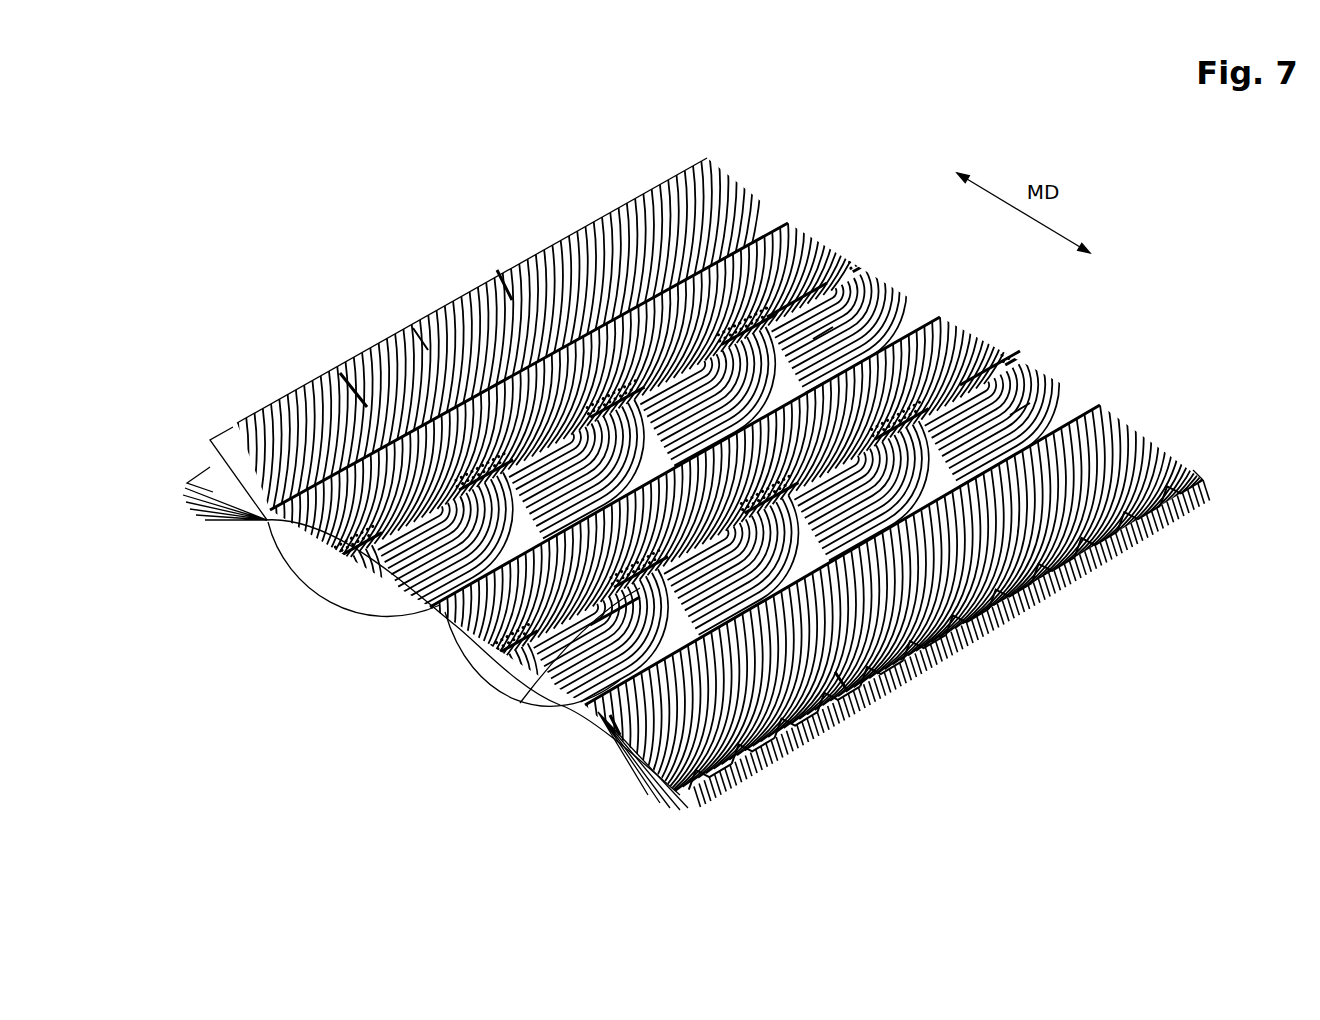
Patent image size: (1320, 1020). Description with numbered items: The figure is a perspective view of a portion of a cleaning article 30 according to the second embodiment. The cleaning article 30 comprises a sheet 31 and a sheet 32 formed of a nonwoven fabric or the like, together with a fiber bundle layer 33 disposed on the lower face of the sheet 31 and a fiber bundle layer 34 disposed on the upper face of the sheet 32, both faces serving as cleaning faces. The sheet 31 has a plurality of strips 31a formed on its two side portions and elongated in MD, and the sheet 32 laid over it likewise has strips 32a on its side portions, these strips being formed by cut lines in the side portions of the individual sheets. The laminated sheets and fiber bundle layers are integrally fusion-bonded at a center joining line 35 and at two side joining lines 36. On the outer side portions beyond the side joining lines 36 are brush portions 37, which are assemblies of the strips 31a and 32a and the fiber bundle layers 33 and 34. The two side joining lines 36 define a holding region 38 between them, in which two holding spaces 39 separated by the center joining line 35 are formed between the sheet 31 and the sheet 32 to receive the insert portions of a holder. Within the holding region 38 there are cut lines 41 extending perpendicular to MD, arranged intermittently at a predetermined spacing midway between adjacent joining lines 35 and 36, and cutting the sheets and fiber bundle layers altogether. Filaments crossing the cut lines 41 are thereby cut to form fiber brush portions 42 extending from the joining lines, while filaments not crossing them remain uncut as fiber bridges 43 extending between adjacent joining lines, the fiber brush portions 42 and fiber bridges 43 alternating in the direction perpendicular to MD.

The cleaning article 30 is at (572, 192).
The sheet 31 is at (337, 580).
The strips 31a is at (190, 478).
The sheet 32 is at (400, 553).
The strips 32a is at (215, 437).
The fiber bundle layer 33 is at (652, 797).
The fiber bundle layer 34 is at (1193, 470).
The center joining line 35 is at (457, 617).
The side joining lines 36 is at (303, 550).
The brush portions 37 is at (732, 139).
The holding region 38 is at (800, 222).
The holding spaces 39 is at (290, 560).
The cut lines 41 is at (500, 278).
The fiber brush portions 42 is at (337, 380).
The fiber bridges 43 is at (413, 328).